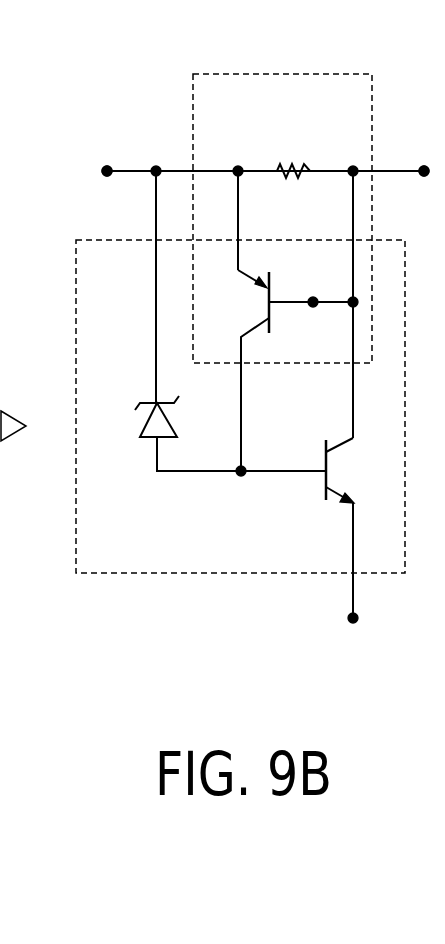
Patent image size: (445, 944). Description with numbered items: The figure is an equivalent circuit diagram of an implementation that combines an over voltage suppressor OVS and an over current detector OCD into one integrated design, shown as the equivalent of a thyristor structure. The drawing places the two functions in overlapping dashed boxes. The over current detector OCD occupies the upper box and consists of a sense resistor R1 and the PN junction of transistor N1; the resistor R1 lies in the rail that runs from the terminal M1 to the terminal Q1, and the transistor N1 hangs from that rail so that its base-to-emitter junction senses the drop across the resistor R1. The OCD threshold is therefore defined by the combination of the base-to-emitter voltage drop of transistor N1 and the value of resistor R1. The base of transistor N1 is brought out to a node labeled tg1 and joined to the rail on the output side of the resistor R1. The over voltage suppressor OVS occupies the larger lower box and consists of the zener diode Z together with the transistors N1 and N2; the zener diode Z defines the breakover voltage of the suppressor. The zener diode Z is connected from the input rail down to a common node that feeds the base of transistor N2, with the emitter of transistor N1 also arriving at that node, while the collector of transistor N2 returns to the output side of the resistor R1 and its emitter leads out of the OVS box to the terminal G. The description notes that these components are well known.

The first main terminal M1 is at (107, 152).
The first output terminal Q1 is at (420, 151).
The gate terminal G is at (371, 570).
The over current detector OCD is at (312, 118).
The over voltage suppressor OVS is at (252, 542).
The sense resistor R1 is at (295, 191).
The transistor N1 is at (281, 370).
The first trigger node tg1 is at (326, 281).
The zener diode Z is at (211, 436).
The transistor N2 is at (356, 470).